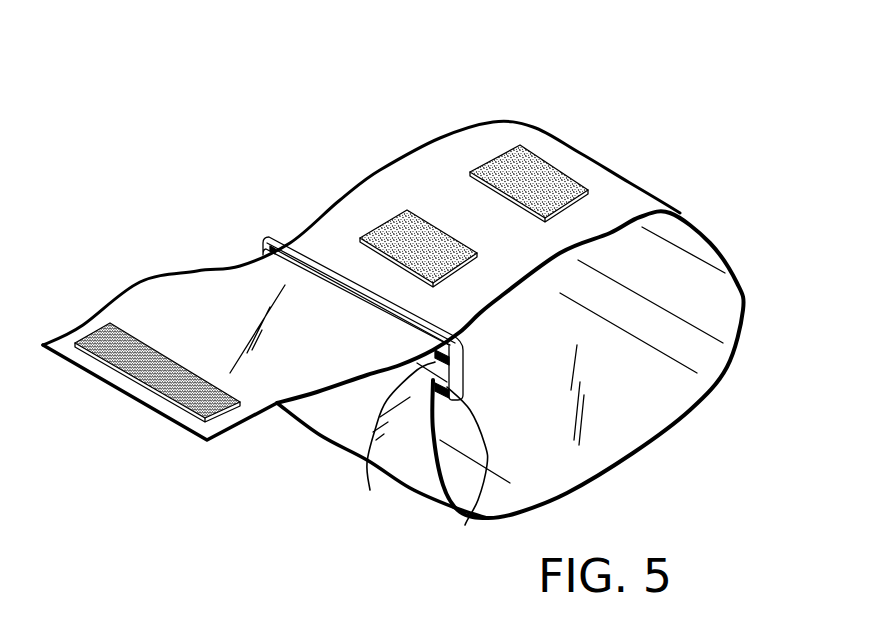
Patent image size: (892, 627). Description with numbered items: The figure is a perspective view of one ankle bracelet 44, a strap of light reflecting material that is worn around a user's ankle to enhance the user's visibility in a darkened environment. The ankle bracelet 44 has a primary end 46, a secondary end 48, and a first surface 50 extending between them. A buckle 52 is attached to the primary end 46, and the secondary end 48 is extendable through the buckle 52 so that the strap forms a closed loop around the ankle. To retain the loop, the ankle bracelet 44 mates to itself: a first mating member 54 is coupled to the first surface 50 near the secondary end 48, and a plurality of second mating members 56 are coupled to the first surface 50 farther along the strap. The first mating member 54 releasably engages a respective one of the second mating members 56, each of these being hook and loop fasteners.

The ankle bracelet 44 is at (497, 122).
The primary end 46 is at (370, 490).
The secondary end 48 is at (127, 393).
The first surface 50 is at (350, 212).
The buckle 52 is at (465, 525).
The first mating member 54 is at (163, 353).
The second mating members 56 is at (410, 238).